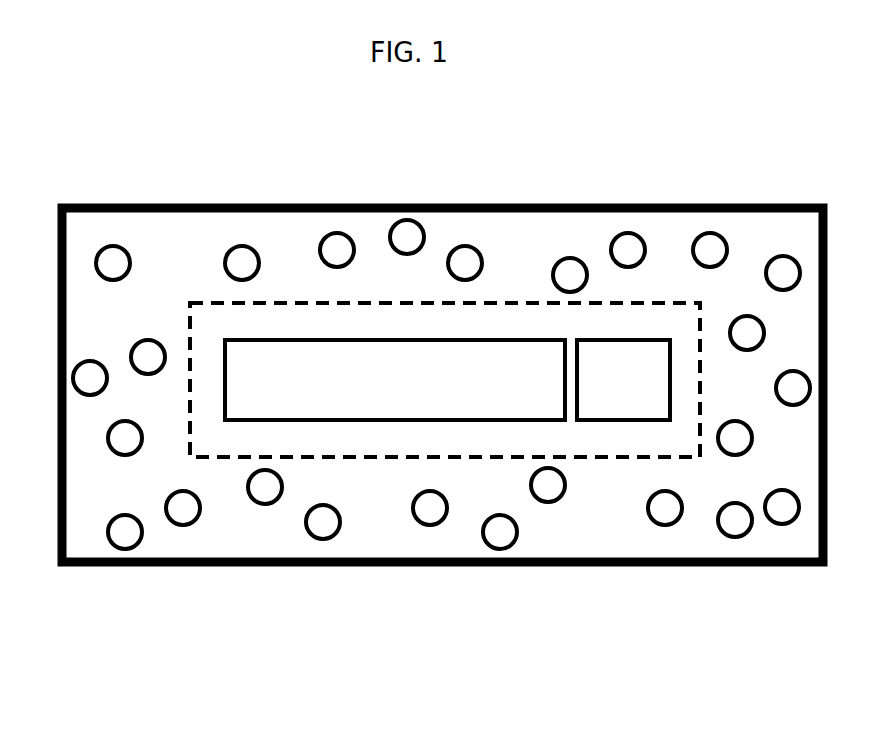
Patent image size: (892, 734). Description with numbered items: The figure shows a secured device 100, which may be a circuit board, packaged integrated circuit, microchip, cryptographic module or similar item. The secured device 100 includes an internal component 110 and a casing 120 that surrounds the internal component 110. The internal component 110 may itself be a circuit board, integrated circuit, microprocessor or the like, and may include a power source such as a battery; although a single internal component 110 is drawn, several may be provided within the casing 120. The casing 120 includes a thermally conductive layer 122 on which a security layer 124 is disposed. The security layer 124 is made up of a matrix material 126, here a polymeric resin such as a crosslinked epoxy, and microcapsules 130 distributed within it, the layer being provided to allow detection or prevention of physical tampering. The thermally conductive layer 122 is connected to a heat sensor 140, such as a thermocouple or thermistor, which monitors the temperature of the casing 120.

The secured device 100 is at (69, 140).
The internal component 110 is at (395, 380).
The casing 120 is at (437, 567).
The thermally conductive layer 122 is at (383, 440).
The security layer 124 is at (219, 592).
The matrix material 126 is at (252, 513).
The microcapsules 130 is at (183, 517).
The heat sensor 140 is at (623, 380).